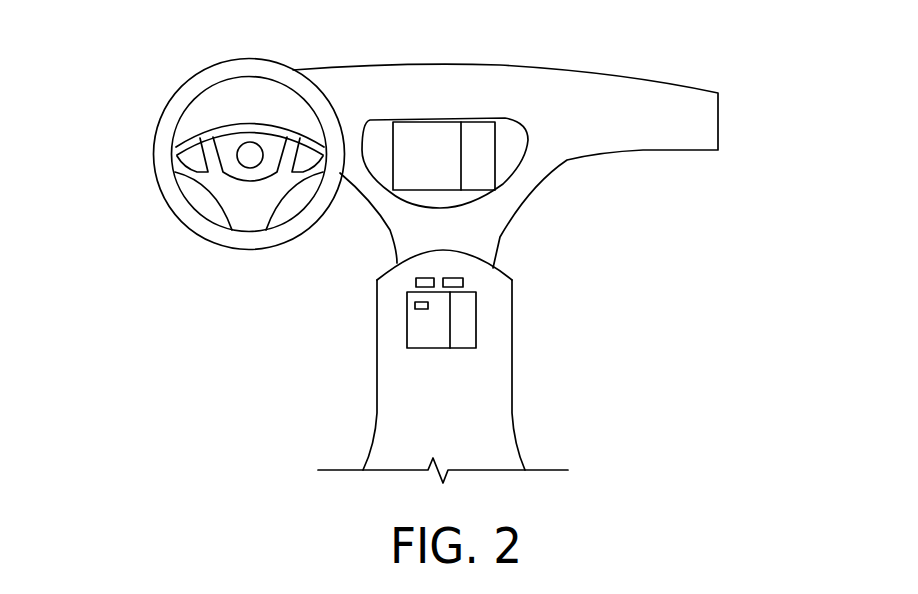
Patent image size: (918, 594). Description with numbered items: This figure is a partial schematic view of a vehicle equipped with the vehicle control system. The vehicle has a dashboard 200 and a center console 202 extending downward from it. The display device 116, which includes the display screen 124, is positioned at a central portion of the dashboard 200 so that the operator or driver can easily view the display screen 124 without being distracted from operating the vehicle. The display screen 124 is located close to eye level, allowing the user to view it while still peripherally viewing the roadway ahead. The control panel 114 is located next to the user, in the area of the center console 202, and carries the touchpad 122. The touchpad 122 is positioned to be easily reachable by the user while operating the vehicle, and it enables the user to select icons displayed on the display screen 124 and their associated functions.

The dashboard 200 is at (480, 73).
The display device 116 is at (394, 122).
The display screen 124 is at (424, 132).
The center console 202 is at (493, 292).
The control panel 114 is at (390, 310).
The touchpad 122 is at (468, 327).